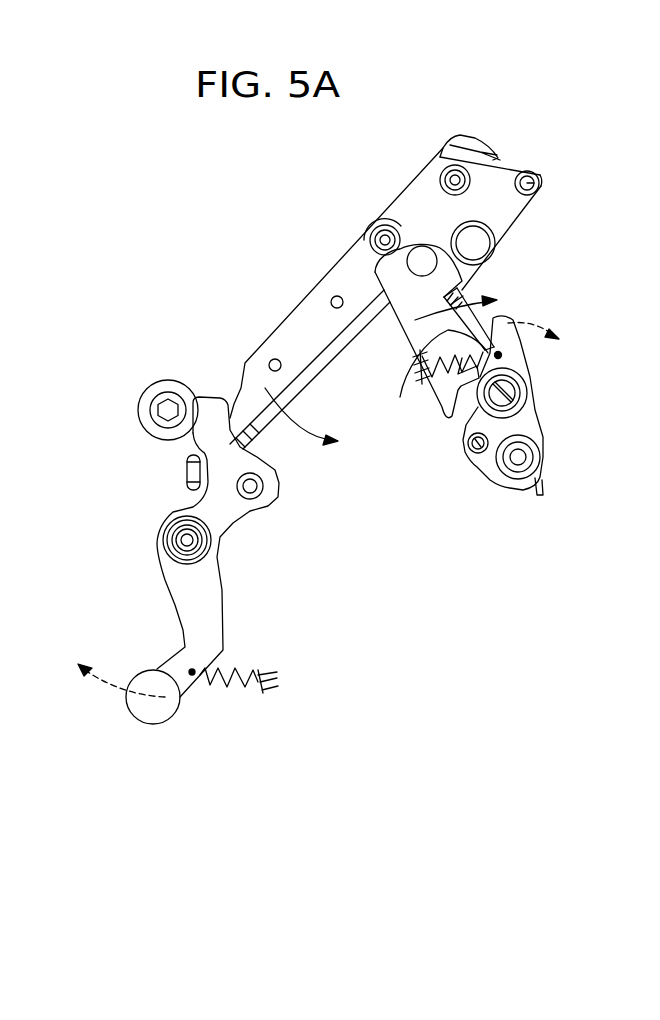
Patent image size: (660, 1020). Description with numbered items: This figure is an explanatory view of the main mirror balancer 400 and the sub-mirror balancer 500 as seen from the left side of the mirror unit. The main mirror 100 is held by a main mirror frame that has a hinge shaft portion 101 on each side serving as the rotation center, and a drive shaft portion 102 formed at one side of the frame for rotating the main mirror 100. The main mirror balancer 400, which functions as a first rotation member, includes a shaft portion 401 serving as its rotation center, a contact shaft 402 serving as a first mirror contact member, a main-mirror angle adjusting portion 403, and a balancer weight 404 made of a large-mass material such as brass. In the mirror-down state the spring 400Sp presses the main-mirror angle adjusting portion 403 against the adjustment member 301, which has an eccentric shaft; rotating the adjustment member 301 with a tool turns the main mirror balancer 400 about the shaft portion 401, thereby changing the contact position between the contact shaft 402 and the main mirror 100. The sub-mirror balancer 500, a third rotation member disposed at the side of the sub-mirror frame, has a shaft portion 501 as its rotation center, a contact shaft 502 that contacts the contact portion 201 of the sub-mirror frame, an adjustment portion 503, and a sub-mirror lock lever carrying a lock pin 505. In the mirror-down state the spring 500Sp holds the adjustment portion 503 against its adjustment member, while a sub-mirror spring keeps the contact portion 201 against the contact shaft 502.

The main mirror 100 is at (313, 348).
The hinge shaft portion 101 is at (539, 183).
The drive shaft portion 102 is at (473, 245).
The contact portion 201 is at (450, 402).
The adjustment member 301 is at (176, 390).
The main mirror balancer 400 is at (202, 615).
The shaft portion 401 is at (187, 540).
The contact shaft 402 is at (250, 486).
The main-mirror angle adjusting portion 403 is at (185, 428).
The balancer weight 404 is at (153, 703).
The spring 400Sp is at (230, 690).
The sub-mirror balancer 500 is at (518, 360).
The shaft portion 501 is at (515, 460).
The contact shaft 502 is at (513, 390).
The adjustment portion 503 is at (421, 357).
The lock pin 505 is at (480, 453).
The spring 500Sp is at (432, 397).